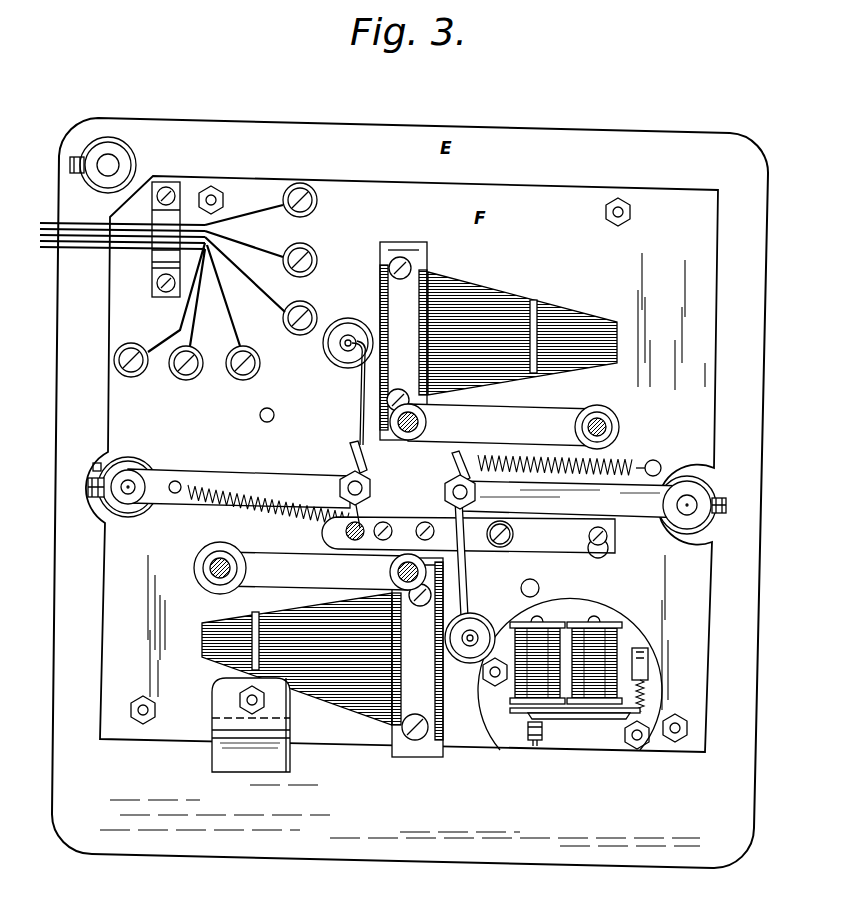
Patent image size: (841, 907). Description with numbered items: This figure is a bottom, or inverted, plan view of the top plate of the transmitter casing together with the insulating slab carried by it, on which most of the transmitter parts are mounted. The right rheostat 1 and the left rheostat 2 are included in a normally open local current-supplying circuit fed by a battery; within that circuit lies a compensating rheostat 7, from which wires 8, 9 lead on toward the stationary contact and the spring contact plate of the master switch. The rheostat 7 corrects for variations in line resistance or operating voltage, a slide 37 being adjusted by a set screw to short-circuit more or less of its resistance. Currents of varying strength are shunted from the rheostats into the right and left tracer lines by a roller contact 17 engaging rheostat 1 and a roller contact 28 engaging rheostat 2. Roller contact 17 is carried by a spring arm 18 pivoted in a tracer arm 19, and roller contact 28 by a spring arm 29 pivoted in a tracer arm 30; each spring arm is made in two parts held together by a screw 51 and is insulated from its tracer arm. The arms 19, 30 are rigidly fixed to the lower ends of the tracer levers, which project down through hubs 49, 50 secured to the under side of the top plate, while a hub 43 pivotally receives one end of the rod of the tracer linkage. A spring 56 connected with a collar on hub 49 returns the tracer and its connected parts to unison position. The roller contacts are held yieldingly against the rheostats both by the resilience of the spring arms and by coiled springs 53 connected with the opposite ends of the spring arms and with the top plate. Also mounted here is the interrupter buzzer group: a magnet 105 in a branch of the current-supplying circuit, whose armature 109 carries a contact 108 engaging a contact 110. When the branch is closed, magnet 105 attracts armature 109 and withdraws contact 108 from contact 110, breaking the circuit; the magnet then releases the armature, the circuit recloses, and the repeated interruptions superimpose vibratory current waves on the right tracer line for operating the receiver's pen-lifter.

The hub 43 is at (128, 160).
The left rheostat 2 is at (496, 300).
The right rheostat 1 is at (300, 617).
The hub 49 is at (108, 464).
The spring 56 is at (103, 500).
The tracer arm 19 is at (257, 475).
The coiled spring 53 is at (287, 517).
The wire 9 is at (478, 456).
The wire 8 is at (600, 547).
The hub 50 is at (707, 497).
The tracer arm 30 is at (586, 505).
The rheostat 7 is at (428, 520).
The spring arm 29 is at (467, 603).
The screw 51 is at (372, 460).
The roller contact 17 is at (323, 352).
The spring arm 18 is at (358, 410).
The magnet 105 is at (540, 624).
The contact 108 is at (597, 722).
The armature 109 is at (526, 712).
The contact 110 is at (529, 731).
The roller contact 28 is at (468, 664).
The slide 37 is at (251, 725).